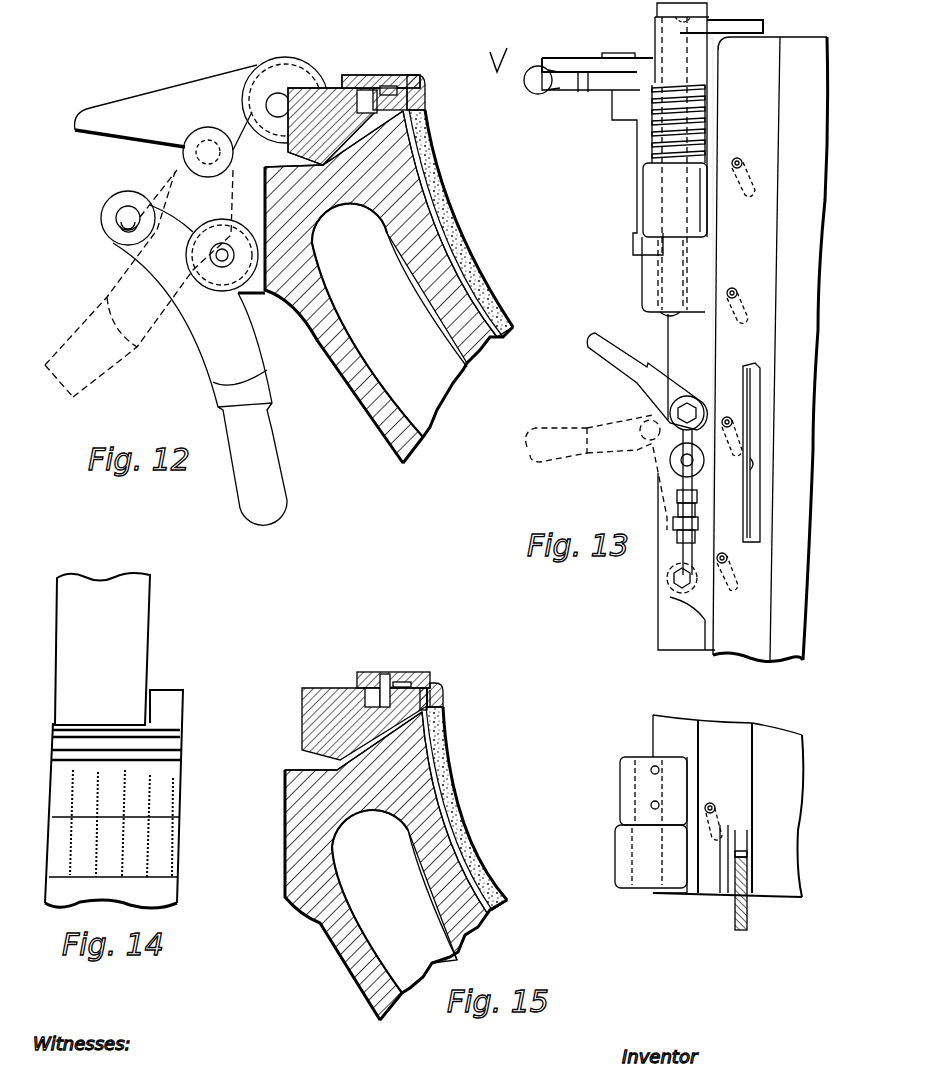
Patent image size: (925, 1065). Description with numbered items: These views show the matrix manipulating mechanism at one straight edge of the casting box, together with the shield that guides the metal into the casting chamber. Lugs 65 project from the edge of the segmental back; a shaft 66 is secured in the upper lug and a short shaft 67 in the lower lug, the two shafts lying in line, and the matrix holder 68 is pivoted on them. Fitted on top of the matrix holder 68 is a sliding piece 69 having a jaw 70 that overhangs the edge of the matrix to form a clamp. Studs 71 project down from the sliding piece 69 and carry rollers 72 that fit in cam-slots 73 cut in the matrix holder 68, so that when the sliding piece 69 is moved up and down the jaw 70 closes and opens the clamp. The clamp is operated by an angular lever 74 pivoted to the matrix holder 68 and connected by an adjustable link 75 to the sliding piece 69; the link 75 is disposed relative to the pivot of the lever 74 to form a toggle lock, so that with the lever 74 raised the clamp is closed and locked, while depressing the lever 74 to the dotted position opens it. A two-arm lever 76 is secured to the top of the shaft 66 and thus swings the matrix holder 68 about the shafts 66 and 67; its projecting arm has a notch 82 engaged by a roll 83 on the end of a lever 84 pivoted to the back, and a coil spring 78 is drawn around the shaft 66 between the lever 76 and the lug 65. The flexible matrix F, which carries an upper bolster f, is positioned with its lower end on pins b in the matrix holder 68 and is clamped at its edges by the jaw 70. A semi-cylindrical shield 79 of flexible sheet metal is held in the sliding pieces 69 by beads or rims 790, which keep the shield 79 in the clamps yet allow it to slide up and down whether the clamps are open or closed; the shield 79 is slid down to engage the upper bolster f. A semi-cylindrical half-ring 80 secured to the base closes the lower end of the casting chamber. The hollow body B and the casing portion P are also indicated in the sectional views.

In FIG. 12, the two-arm lever 76 is at (140, 112).
In FIG. 13, the two-arm lever 76 is at (560, 63).
In FIG. 12, the matrix holder 68 is at (280, 92).
In FIG. 13, the matrix holder 68 is at (667, 633).
In FIG. 15, the matrix holder 68 is at (302, 700).
In FIG. 12, the rollers 72 is at (332, 95).
In FIG. 15, the rollers 72 is at (330, 688).
In FIG. 12, the studs 71 is at (368, 77).
In FIG. 13, the studs 71 is at (733, 290).
In FIG. 15, the studs 71 is at (385, 673).
In FIG. 12, the sliding piece 69 is at (397, 84).
In FIG. 13, the sliding piece 69 is at (737, 640).
In FIG. 15, the sliding piece 69 is at (420, 672).
In FIG. 12, the jaw 70 is at (420, 86).
In FIG. 15, the jaw 70 is at (445, 693).
In FIG. 12, the pins b is at (428, 113).
In FIG. 13, the pins b is at (724, 893).
In FIG. 12, the body B is at (389, 287).
In FIG. 15, the body B is at (396, 866).
In FIG. 12, the flexible matrix F is at (447, 247).
In FIG. 13, the flexible matrix F is at (752, 525).
In FIG. 14, the flexible matrix F is at (165, 832).
In FIG. 12, the plate P is at (480, 301).
In FIG. 15, the plate P is at (483, 853).
In FIG. 12, the notches 82 is at (210, 134).
In FIG. 12, the rolls 83 is at (112, 230).
In FIG. 12, the levers 84 is at (267, 505).
In FIG. 13, the levers 84 is at (547, 90).
In FIG. 13, the spring 78 is at (700, 133).
In FIG. 13, the lugs 65 is at (647, 201).
In FIG. 13, the shaft 66 is at (673, 278).
In FIG. 13, the cam-slots 73 is at (740, 323).
In FIG. 13, the angular lever 74 is at (598, 345).
In FIG. 13, the adjustable link 75 is at (677, 473).
In FIG. 13, the shield 79 is at (757, 412).
In FIG. 14, the shield 79 is at (120, 628).
In FIG. 15, the shield 79 is at (443, 767).
In FIG. 13, the bolster f is at (755, 465).
In FIG. 14, the bolster f is at (178, 745).
In FIG. 13, the short shaft 67 is at (648, 893).
In FIG. 13, the semi-cylindrical half-ring 80 is at (740, 930).
In FIG. 15, the beads or rims 790 is at (440, 680).